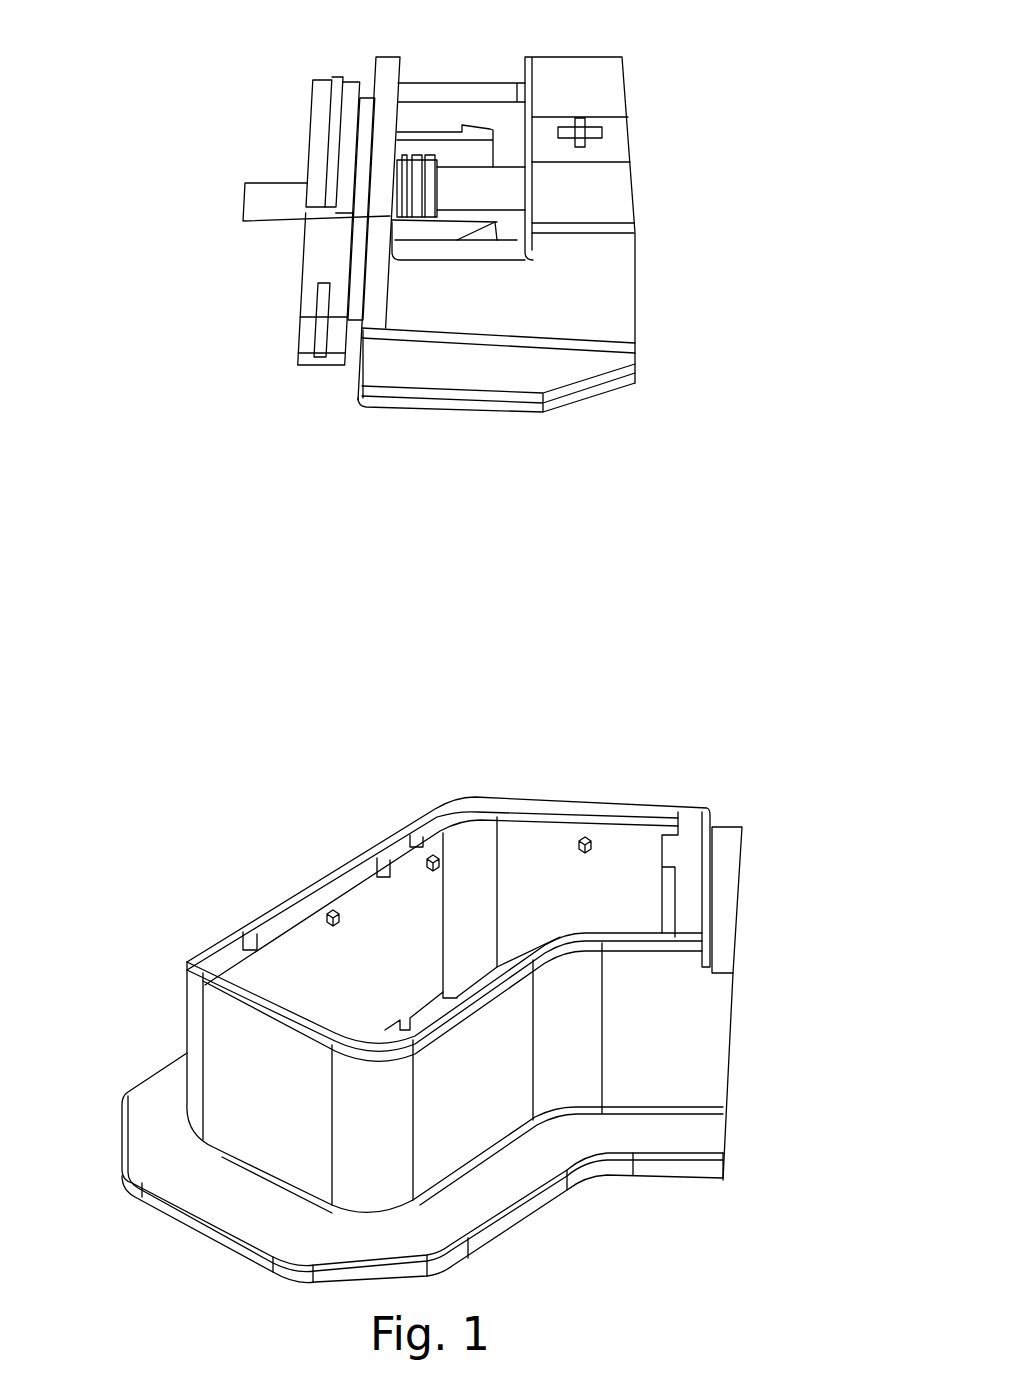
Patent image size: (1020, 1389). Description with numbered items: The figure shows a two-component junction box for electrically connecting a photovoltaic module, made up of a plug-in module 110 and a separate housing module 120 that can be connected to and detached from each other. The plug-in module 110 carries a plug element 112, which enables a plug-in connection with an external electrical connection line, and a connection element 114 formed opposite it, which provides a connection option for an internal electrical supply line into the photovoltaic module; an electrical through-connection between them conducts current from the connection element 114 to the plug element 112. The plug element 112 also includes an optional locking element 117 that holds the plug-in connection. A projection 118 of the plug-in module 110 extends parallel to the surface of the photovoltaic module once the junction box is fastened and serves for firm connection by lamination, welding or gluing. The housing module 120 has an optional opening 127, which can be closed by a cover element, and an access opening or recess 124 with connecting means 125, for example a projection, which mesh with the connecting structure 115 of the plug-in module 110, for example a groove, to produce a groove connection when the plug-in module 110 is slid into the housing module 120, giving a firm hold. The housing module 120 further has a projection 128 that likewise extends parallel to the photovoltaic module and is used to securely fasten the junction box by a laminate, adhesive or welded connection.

The plug-in module 110 is at (243, 101).
The plug element 112 is at (448, 187).
The connection element 114 is at (262, 207).
The connecting structure 115 is at (348, 369).
The locking element 117 is at (478, 226).
The projection 118 is at (563, 363).
The housing module 120 is at (134, 900).
The access opening or recess 124 is at (734, 1008).
The connecting means 125 is at (727, 900).
The opening 127 is at (540, 896).
The projection 128 is at (710, 1138).